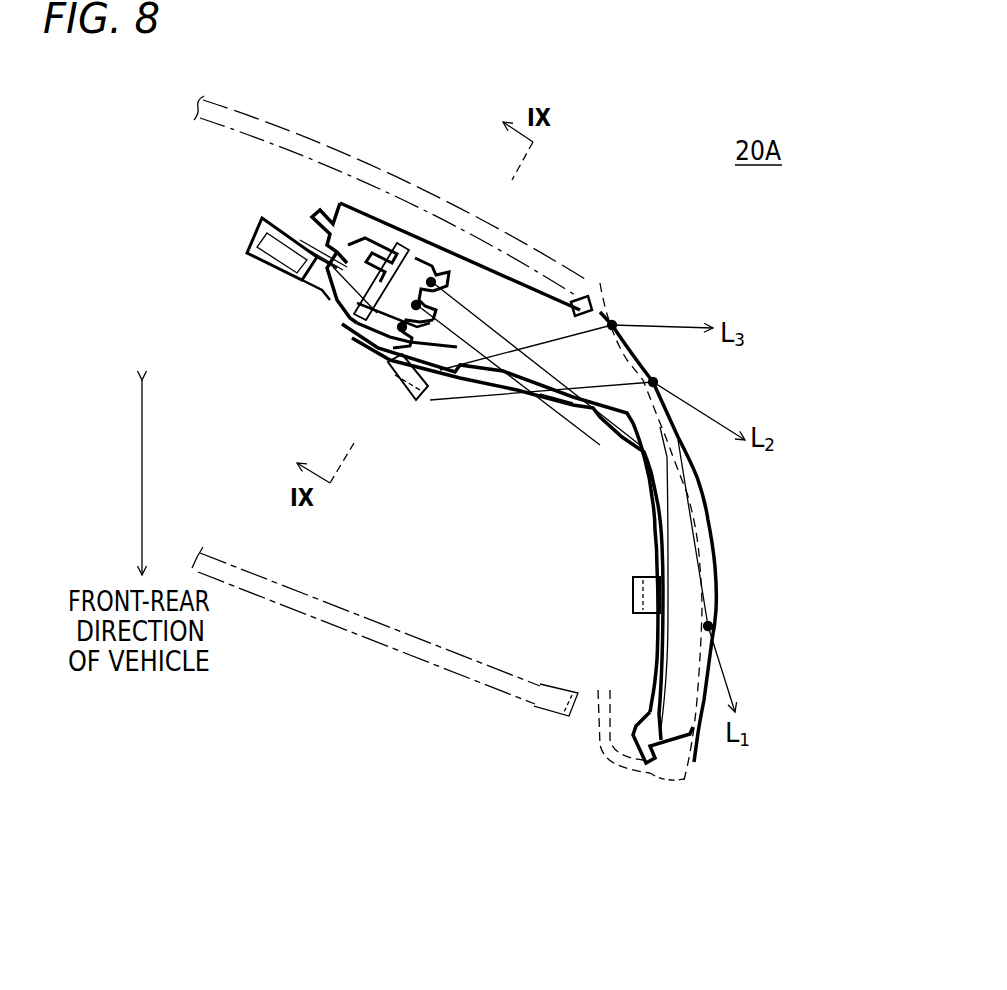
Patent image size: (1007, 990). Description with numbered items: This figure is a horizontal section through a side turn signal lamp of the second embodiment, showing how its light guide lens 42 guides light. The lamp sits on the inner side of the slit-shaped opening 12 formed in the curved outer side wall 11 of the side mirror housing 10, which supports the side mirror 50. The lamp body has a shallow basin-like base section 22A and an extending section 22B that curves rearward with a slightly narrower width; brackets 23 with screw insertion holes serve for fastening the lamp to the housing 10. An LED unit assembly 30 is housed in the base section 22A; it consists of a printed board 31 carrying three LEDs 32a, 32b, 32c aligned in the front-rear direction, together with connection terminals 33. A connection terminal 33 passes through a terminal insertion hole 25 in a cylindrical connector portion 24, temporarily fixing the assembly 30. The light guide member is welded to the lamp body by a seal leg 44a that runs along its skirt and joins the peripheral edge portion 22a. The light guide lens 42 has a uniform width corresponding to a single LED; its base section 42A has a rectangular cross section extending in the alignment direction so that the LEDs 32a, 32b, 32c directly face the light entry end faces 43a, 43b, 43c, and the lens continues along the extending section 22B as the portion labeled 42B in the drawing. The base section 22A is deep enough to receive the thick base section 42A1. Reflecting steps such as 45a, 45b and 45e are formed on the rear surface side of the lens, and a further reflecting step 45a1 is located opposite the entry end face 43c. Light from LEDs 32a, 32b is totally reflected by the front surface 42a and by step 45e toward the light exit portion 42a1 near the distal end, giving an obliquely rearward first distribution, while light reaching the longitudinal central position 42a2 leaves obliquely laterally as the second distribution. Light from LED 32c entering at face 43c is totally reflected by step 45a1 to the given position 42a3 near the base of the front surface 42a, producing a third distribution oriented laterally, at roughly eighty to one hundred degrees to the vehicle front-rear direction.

The side mirror housing 10 is at (350, 152).
The outer side wall 11 is at (612, 770).
The opening 12 is at (602, 283).
The peripheral edge portion 22a is at (292, 226).
The base section 22A is at (380, 352).
The extending section 22B is at (648, 478).
The bracket 23 is at (413, 402).
The cylindrical connector portion 24 is at (262, 262).
The terminal insertion hole 25 is at (343, 290).
The LED unit assembly 30 is at (351, 226).
The printed board 31 is at (403, 243).
The LED 32a is at (433, 278).
The LED 32b is at (513, 310).
The LED 32c is at (387, 330).
The connection terminal 33 is at (273, 237).
The light guide lens 42 is at (730, 537).
The front surface 42a is at (712, 517).
The light exit portion 42a1 is at (711, 625).
The longitudinal central position 42a2 is at (655, 388).
The given position 42a3 is at (612, 325).
The base section 42A is at (407, 390).
The thick base section 42A1 is at (572, 300).
The bracket second portion 42B is at (660, 523).
The light entry end face 43a is at (452, 270).
The light entry end face 43b is at (345, 325).
The light entry end face 43c is at (377, 348).
The seal leg 44a is at (313, 214).
The reflecting step 45a is at (547, 413).
The reflecting step 45a1 is at (497, 374).
The reflecting step 45b is at (600, 417).
The reflecting step 45e is at (669, 567).
The side mirror 50 is at (338, 626).